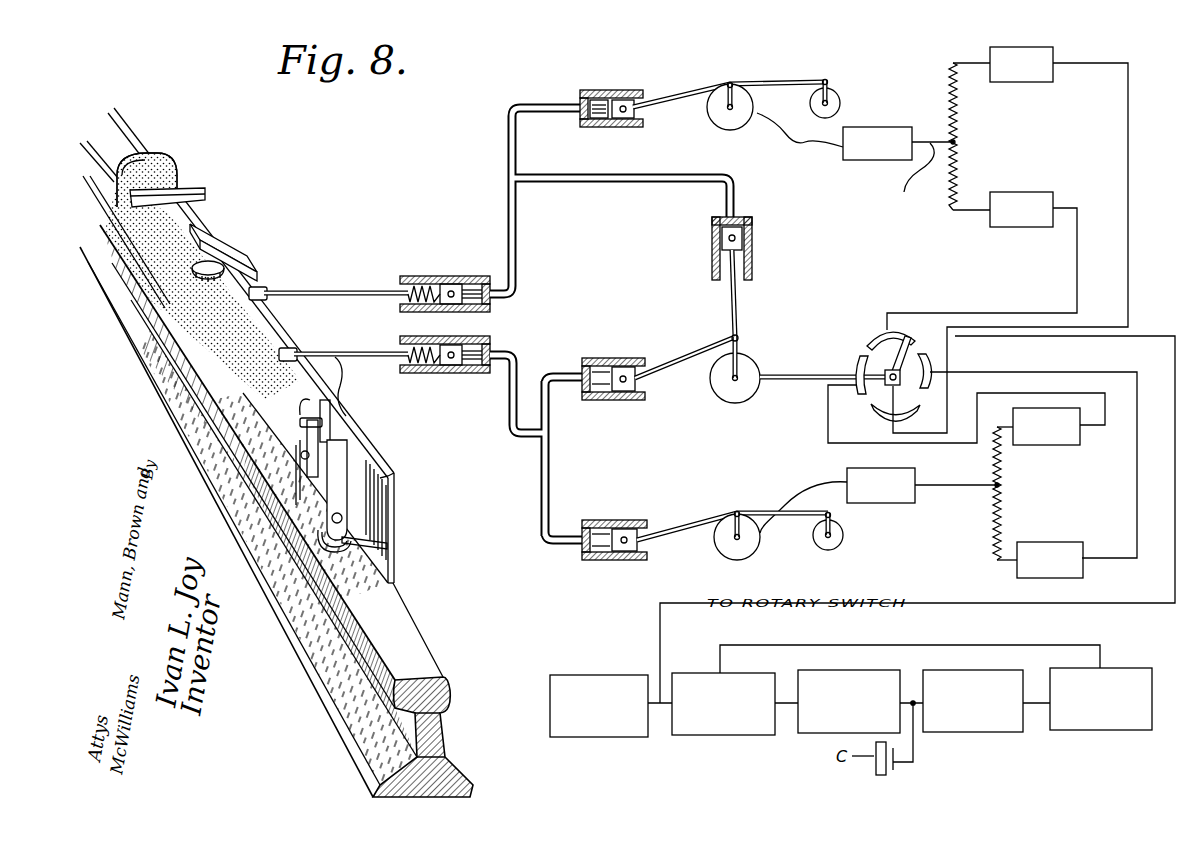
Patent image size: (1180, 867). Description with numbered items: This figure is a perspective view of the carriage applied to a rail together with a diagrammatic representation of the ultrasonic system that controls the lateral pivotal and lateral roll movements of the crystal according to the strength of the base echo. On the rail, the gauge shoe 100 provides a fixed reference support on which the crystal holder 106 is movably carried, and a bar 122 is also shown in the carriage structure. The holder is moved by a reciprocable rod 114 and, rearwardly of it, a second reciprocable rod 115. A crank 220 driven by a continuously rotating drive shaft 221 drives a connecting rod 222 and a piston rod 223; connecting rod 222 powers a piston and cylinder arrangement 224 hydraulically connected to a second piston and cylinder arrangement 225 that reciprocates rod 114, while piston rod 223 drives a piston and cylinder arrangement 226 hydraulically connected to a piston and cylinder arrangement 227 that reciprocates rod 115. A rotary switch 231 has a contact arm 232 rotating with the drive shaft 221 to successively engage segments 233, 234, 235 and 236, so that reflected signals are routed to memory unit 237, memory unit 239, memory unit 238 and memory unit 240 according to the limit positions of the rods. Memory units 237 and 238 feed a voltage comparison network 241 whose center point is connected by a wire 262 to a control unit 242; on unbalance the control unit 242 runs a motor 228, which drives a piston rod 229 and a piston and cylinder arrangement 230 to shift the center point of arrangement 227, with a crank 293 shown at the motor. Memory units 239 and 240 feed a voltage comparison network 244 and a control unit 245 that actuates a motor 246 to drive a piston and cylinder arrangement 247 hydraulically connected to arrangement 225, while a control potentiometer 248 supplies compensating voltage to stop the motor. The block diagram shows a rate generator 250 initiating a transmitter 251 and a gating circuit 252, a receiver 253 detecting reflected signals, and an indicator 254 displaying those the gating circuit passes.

The gauge shoe 100 is at (354, 558).
The crystal holder 106 is at (206, 264).
The reciprocable rod 114 is at (356, 358).
The reciprocable rod 115 is at (316, 297).
The transverse bar 122 is at (222, 201).
The crank 220 is at (741, 349).
The drive shaft 221 is at (727, 394).
The connecting rod 222 is at (676, 353).
The piston rod 223 is at (746, 297).
The piston and cylinder arrangement 224 is at (604, 402).
The piston and cylinder arrangement 225 is at (432, 378).
The piston and cylinder arrangement 226 is at (753, 241).
The piston and cylinder arrangement 227 is at (450, 268).
The motor 228 is at (716, 118).
The piston rod 229 is at (665, 97).
The piston and cylinder arrangement 230 is at (584, 92).
The rotary switch 231 is at (968, 420).
The contact arm 232 is at (890, 356).
The segment 233 is at (906, 336).
The segment 234 is at (931, 364).
The segment 235 is at (871, 409).
The segment 236 is at (857, 360).
The memory unit 237 is at (1008, 203).
The memory unit 238 is at (1010, 50).
The memory unit 239 is at (1028, 550).
The memory unit 240 is at (1035, 438).
The voltage comparison network 241 is at (964, 134).
The control unit 242 is at (860, 132).
The voltage comparison network 244 is at (983, 518).
The control unit 245 is at (890, 500).
The motor 246 is at (722, 543).
The piston and cylinder arrangement 247 is at (608, 521).
The control potentiometer 248 is at (818, 548).
The rate generator 250 is at (1121, 676).
The transmitter 251 is at (958, 681).
The gating circuit 252 is at (689, 683).
The receiver 253 is at (830, 681).
The indicator 254 is at (583, 681).
The wire 262 is at (909, 177).
The crank disc 293 is at (829, 90).